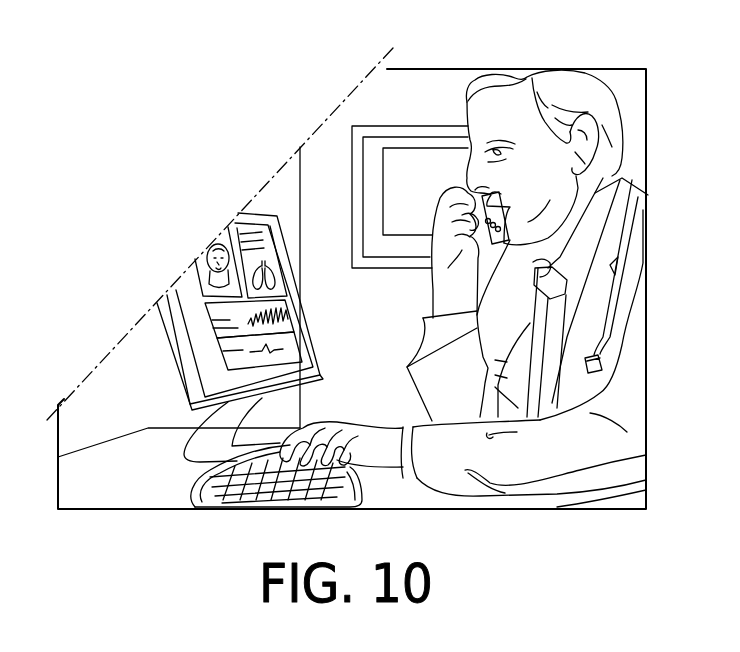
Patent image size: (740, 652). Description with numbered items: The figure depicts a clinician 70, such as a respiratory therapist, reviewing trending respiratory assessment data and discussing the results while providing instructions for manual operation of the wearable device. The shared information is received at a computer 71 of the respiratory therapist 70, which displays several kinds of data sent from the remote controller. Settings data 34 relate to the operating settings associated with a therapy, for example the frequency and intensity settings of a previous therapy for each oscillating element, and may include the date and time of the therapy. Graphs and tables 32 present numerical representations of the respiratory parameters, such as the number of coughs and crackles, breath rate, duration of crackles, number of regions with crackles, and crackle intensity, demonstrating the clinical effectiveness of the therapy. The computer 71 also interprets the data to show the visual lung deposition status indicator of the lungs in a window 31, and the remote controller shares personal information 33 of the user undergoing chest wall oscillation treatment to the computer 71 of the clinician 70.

The clinician 70 is at (353, 289).
The computer 71 is at (305, 386).
The window 31 is at (271, 284).
The graphs and tables 32 is at (284, 318).
The personal information 33 is at (215, 250).
The settings data 34 is at (217, 320).